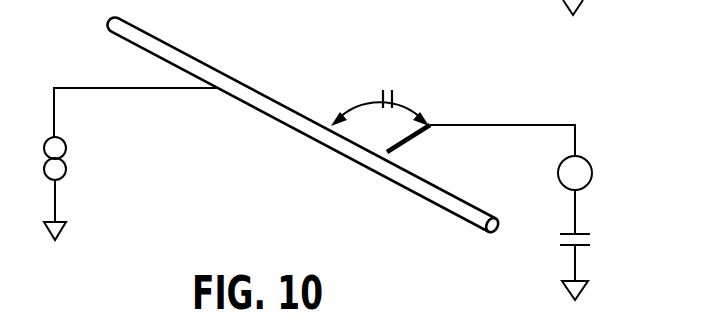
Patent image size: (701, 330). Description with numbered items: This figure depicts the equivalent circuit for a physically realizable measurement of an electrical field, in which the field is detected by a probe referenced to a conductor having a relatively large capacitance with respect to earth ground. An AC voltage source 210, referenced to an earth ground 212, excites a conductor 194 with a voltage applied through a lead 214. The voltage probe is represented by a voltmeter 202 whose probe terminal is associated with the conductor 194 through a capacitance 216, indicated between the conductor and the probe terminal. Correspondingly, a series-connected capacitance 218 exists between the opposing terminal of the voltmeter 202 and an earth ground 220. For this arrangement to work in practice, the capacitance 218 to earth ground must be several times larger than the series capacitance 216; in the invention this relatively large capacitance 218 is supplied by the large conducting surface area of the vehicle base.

The conductor 194 is at (288, 100).
The voltmeter 202 is at (588, 162).
The AC voltage source 210 is at (66, 148).
The earth ground 212 is at (64, 229).
The lead 214 is at (155, 88).
The capacitance 216 is at (396, 97).
The series-connected capacitance 218 is at (585, 233).
The earth ground 220 is at (582, 292).